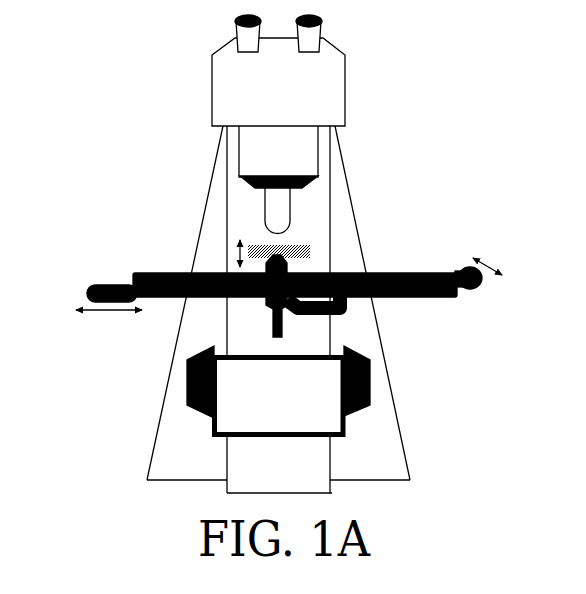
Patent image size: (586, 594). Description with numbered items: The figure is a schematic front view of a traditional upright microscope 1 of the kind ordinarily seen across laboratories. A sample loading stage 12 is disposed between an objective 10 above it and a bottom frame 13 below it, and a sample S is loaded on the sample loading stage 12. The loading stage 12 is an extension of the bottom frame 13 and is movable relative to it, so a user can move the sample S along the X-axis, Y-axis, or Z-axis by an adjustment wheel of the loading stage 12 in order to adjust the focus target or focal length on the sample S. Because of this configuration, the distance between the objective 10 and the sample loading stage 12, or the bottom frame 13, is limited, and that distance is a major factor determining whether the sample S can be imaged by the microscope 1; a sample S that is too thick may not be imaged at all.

The microscope 1 is at (280, 254).
The objective 10 is at (290, 222).
The sample loading stage 12 is at (417, 274).
The bottom frame 13 is at (332, 420).
The sample S is at (310, 253).